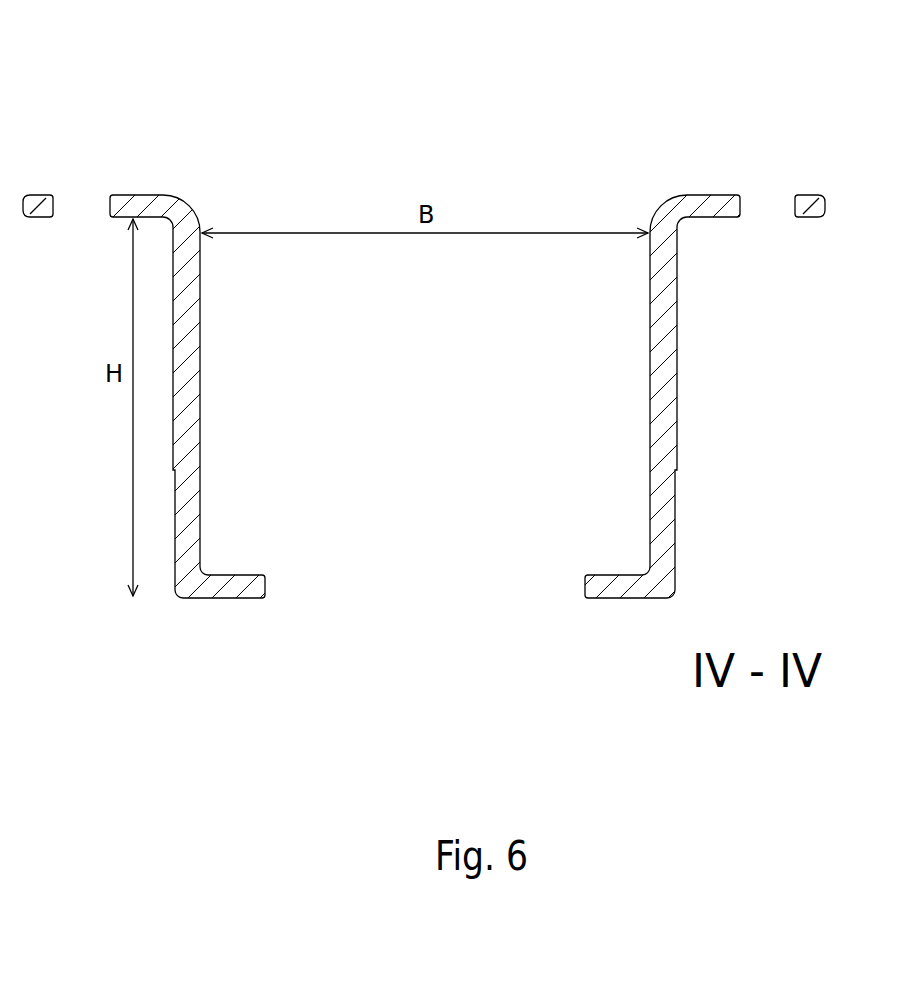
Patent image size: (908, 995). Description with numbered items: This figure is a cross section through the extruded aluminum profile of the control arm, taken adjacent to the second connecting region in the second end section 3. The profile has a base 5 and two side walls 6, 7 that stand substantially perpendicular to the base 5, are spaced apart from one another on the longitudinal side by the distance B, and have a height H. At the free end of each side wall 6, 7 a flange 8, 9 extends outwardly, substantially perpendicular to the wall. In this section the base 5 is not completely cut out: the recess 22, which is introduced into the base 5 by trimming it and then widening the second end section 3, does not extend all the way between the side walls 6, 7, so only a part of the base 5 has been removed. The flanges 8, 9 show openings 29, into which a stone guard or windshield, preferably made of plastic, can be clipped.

The second end section 3 is at (148, 688).
The base 5 is at (608, 583).
The side wall 6 is at (190, 423).
The side wall 7 is at (653, 380).
The flange 8 is at (137, 207).
The flange 9 is at (718, 208).
The recess 22 is at (410, 583).
The openings 29 is at (80, 210).